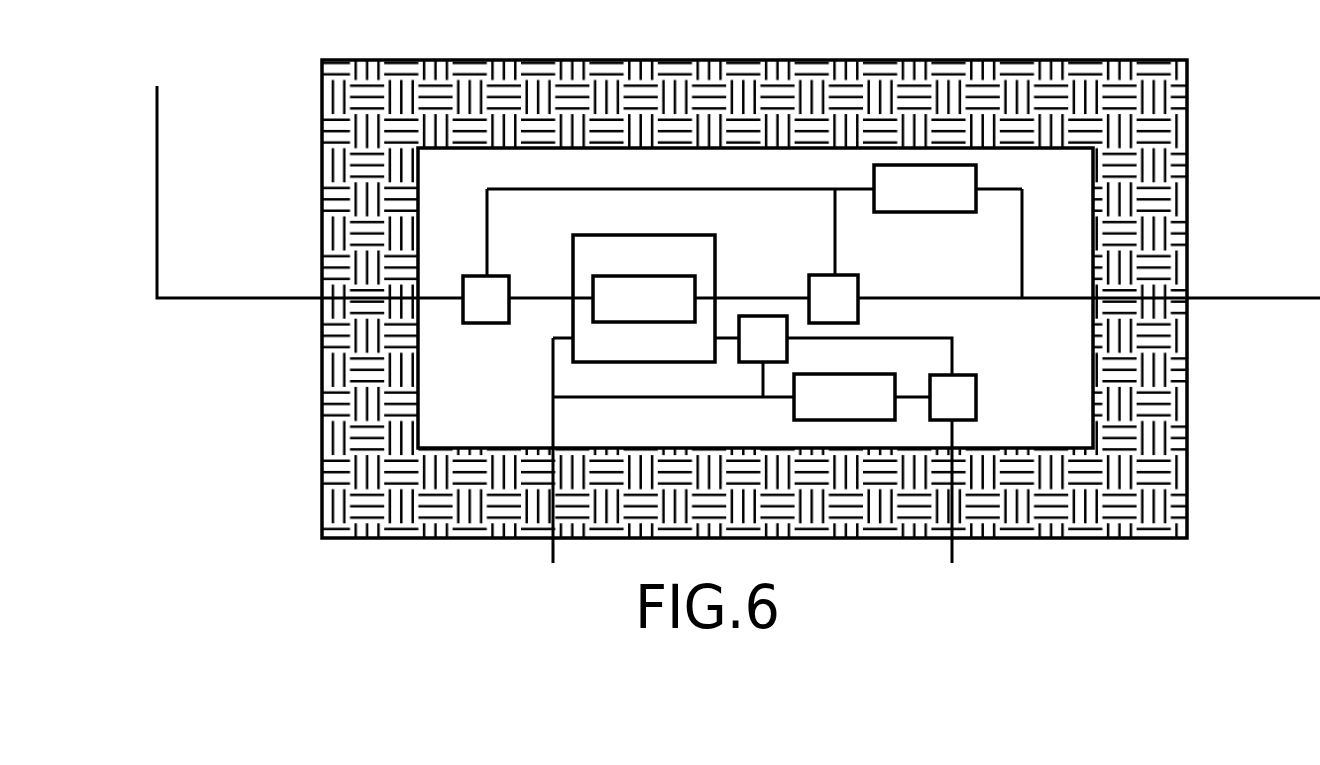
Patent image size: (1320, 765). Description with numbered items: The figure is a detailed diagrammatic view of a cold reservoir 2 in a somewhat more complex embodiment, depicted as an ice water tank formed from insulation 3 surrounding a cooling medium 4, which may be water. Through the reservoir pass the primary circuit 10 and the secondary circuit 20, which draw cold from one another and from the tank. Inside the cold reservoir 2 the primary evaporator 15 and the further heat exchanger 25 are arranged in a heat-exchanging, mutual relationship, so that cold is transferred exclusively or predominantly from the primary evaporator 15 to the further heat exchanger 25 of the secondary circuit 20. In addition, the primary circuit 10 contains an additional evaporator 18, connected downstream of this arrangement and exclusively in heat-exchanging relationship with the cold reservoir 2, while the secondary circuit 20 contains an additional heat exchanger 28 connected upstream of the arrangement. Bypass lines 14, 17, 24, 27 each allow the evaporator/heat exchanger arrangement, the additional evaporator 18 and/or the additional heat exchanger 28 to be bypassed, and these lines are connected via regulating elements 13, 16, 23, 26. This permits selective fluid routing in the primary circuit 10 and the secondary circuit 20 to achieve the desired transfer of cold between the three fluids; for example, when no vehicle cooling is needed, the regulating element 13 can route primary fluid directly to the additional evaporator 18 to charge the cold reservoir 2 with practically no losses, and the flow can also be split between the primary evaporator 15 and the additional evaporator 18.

The cold reservoir 2 is at (1122, 70).
The insulation 3 is at (1180, 424).
The cooling medium 4 is at (486, 157).
The primary circuit 10 is at (120, 284).
The regulating element 13 is at (480, 318).
The bypass line 14 is at (753, 189).
The primary evaporator 15 is at (680, 282).
The regulating element 16 is at (843, 277).
The bypass line 17 is at (1005, 302).
The additional evaporator 18 is at (940, 208).
The secondary circuit 20 is at (528, 586).
The regulating element 23 is at (967, 410).
The bypass line 24 is at (702, 400).
The further heat exchanger 25 is at (622, 242).
The regulating element 26 is at (753, 355).
The bypass line 27 is at (932, 337).
The additional heat exchanger 28 is at (830, 417).